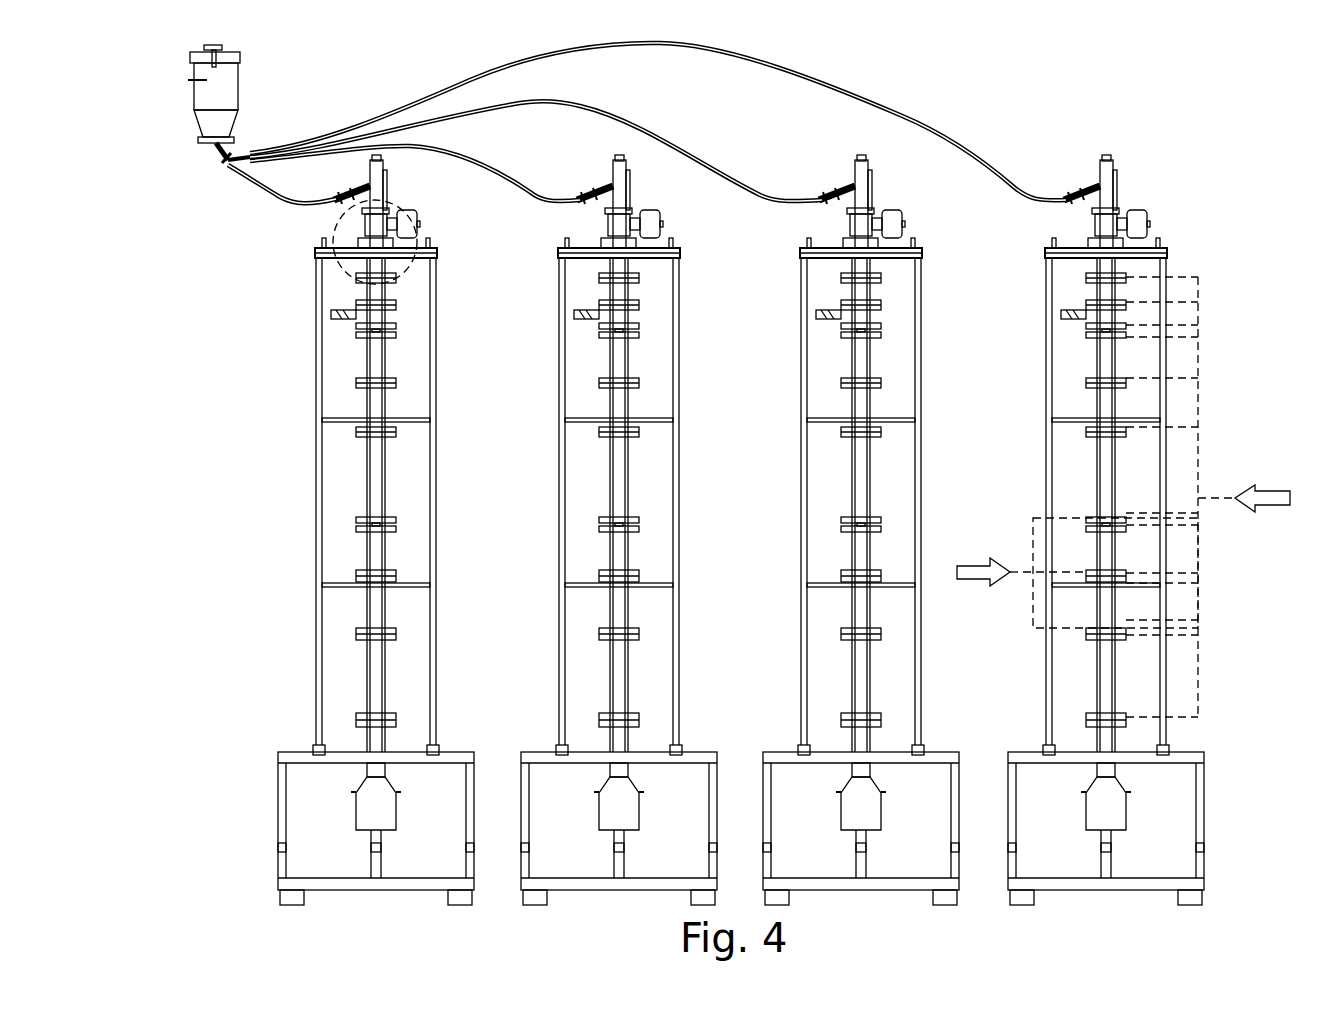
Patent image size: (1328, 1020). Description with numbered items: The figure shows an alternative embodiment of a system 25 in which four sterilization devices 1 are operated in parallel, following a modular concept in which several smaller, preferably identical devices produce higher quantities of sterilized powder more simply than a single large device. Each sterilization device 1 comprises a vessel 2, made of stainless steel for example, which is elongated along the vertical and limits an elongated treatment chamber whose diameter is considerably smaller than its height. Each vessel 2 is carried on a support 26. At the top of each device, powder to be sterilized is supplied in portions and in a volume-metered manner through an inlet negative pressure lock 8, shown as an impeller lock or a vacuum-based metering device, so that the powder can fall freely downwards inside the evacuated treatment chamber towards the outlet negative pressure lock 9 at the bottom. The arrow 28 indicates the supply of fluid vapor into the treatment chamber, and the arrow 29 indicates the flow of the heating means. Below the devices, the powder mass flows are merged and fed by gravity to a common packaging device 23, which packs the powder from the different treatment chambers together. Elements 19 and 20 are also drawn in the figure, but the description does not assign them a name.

The sterilization device 1 is at (708, 516).
The vessel 2 is at (385, 452).
The inlet negative pressure lock 8 is at (432, 212).
The outlet negative pressure lock 9 is at (380, 762).
The supply line 19 is at (688, 152).
The feed hopper 20 is at (205, 93).
The packaging device 23 is at (345, 803).
The system 25 is at (1224, 662).
The support 26 is at (432, 495).
The arrow (vapor supply) 28 is at (982, 565).
The arrow (heating means flow) 29 is at (1268, 496).